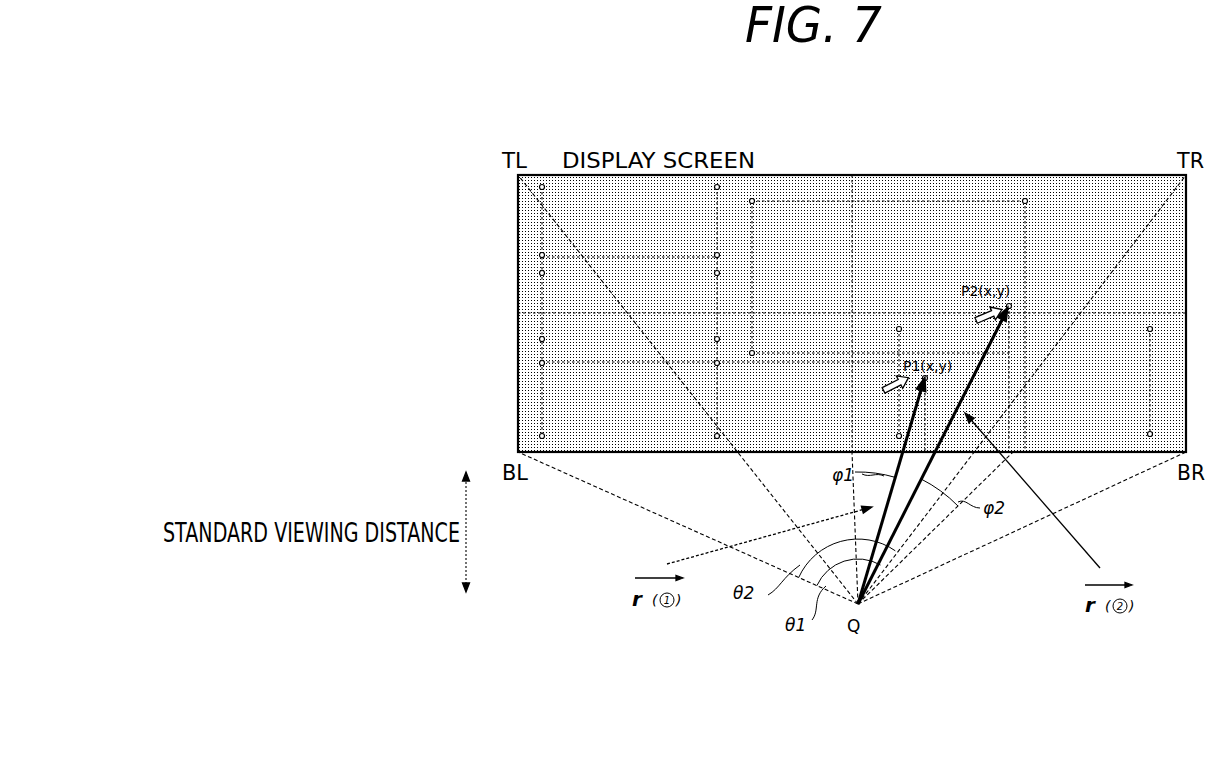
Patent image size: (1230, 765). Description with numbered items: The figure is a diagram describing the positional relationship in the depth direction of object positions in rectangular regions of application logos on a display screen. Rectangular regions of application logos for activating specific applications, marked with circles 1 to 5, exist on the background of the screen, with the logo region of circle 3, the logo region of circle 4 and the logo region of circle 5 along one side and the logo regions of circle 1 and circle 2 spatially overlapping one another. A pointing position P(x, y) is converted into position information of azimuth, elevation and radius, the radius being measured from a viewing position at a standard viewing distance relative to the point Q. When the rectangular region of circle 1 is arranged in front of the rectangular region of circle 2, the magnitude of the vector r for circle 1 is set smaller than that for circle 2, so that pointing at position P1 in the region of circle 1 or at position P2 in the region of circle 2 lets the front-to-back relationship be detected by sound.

The rectangular region of application logo of circle 1 is at (1020, 382).
The rectangular region of application logo of circle 2 is at (805, 290).
The rectangular region of application logo of circle 3 is at (618, 230).
The rectangular region of application logo of circle 4 is at (618, 305).
The rectangular region of application logo of circle 5 is at (618, 405).